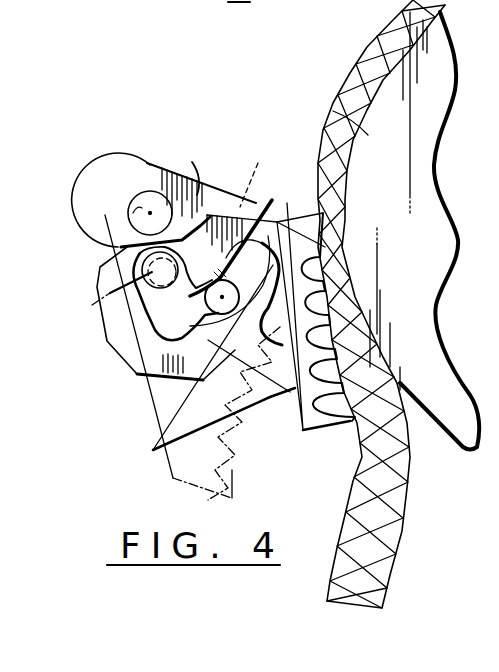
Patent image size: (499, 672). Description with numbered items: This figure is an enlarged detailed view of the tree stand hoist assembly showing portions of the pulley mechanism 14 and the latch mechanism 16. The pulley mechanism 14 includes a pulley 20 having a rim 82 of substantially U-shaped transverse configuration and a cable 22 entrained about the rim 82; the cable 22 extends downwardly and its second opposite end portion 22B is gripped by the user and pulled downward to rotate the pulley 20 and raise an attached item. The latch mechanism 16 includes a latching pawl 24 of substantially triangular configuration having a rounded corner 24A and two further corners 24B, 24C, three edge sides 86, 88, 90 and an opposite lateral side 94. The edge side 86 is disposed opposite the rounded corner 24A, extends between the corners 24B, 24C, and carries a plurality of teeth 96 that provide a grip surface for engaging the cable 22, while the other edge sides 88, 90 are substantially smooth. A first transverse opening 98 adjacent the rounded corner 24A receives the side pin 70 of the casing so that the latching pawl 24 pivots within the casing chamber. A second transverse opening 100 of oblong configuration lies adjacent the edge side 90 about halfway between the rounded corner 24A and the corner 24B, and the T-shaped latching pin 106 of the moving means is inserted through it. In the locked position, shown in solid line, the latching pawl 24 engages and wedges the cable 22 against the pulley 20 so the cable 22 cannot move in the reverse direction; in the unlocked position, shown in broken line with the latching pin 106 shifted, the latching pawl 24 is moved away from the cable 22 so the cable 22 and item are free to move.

The pulley mechanism 14 is at (320, 81).
The latch mechanism 16 is at (88, 266).
The pulley 20 is at (440, 73).
The cable 22 is at (380, 53).
The second opposite end portion 22B is at (397, 518).
The latching pawl 24 is at (210, 187).
The rounded corner 24A is at (123, 173).
The corner 24B is at (160, 463).
The corner 24C is at (333, 212).
The side pin 70 is at (150, 213).
The rim 82 is at (333, 111).
The edge side 86 is at (297, 359).
The edge side 88 is at (258, 171).
The edge side 90 is at (165, 462).
The lateral side 94 is at (192, 162).
The teeth 96 is at (317, 286).
The first transverse opening 98 is at (133, 213).
The second transverse opening 100 is at (272, 212).
The latching pin 106 is at (222, 297).